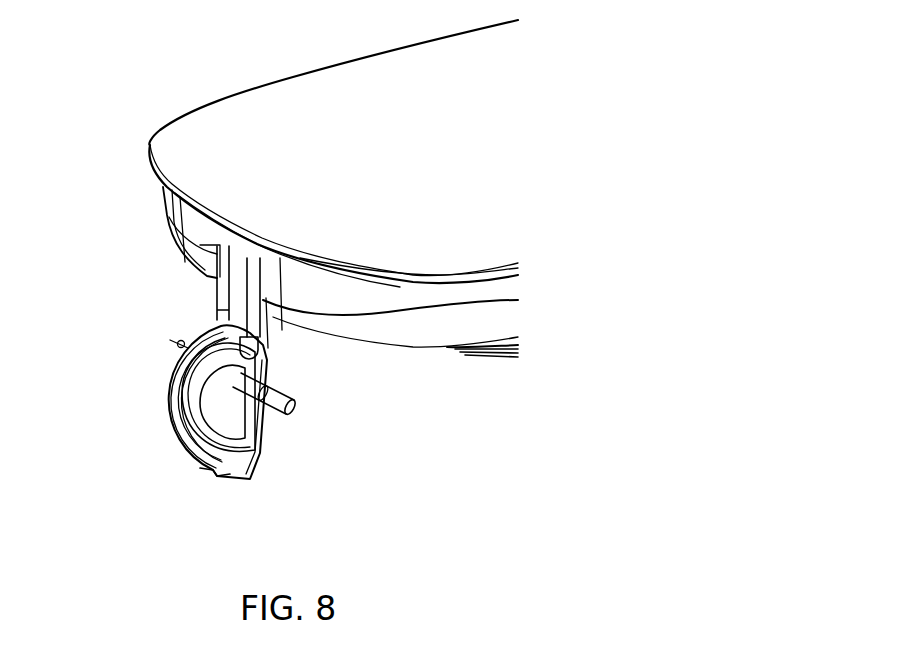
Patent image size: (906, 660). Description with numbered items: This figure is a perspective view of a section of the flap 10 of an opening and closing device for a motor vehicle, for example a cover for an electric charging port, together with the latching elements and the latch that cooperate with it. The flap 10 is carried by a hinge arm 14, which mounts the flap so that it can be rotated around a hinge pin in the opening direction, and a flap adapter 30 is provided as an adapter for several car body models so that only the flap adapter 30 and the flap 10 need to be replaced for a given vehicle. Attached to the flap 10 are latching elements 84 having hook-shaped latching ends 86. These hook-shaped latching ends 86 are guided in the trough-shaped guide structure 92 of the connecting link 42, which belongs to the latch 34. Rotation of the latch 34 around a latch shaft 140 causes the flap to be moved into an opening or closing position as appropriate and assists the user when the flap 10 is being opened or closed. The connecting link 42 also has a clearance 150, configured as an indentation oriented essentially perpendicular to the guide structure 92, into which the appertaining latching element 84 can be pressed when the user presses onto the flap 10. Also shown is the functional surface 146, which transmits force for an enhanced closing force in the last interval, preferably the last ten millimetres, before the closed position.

The flap 10 is at (447, 152).
The hinge arm 14 is at (493, 320).
The flap adapter 30 is at (492, 295).
The latch 34 is at (163, 403).
The connecting link 42 is at (257, 463).
The latching element 84 is at (224, 268).
The hook-shaped latching end 86 is at (247, 350).
The guide structure 92 is at (207, 457).
The latch shaft 140 is at (293, 408).
The functional surface 146 is at (210, 378).
The clearance 150 is at (220, 368).